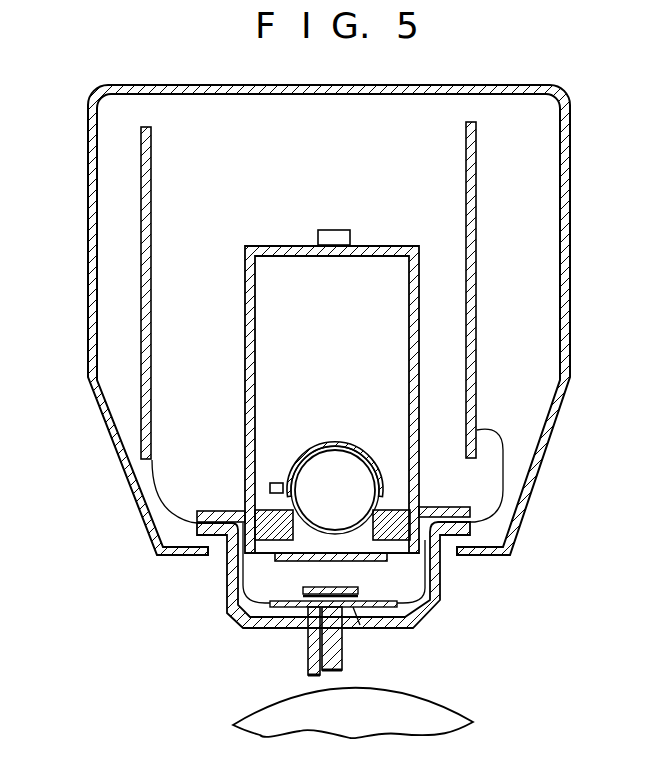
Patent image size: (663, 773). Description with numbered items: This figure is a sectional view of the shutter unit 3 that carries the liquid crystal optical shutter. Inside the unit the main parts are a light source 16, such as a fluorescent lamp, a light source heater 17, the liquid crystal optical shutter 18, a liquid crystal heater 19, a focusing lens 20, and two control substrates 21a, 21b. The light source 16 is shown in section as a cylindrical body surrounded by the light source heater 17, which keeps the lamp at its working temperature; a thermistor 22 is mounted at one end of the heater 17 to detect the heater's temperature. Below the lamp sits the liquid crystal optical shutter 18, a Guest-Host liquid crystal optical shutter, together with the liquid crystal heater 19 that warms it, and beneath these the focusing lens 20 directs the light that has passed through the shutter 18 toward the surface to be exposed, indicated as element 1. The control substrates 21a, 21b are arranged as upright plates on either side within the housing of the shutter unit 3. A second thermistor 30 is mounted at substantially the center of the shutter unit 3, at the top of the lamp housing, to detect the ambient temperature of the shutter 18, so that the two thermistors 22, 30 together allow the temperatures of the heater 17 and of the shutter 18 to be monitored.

The object to be measured 1 is at (455, 720).
The shutter unit 3 is at (113, 515).
The light source 16 is at (356, 447).
The light source heater 17 is at (325, 440).
The liquid crystal optical shutter 18 is at (372, 624).
The liquid crystal heater 19 is at (353, 588).
The focusing lens 20 is at (342, 655).
The control substrate 21a is at (152, 165).
The control substrate 21b is at (477, 165).
The thermistor 22 is at (277, 483).
The thermistor 30 is at (337, 230).